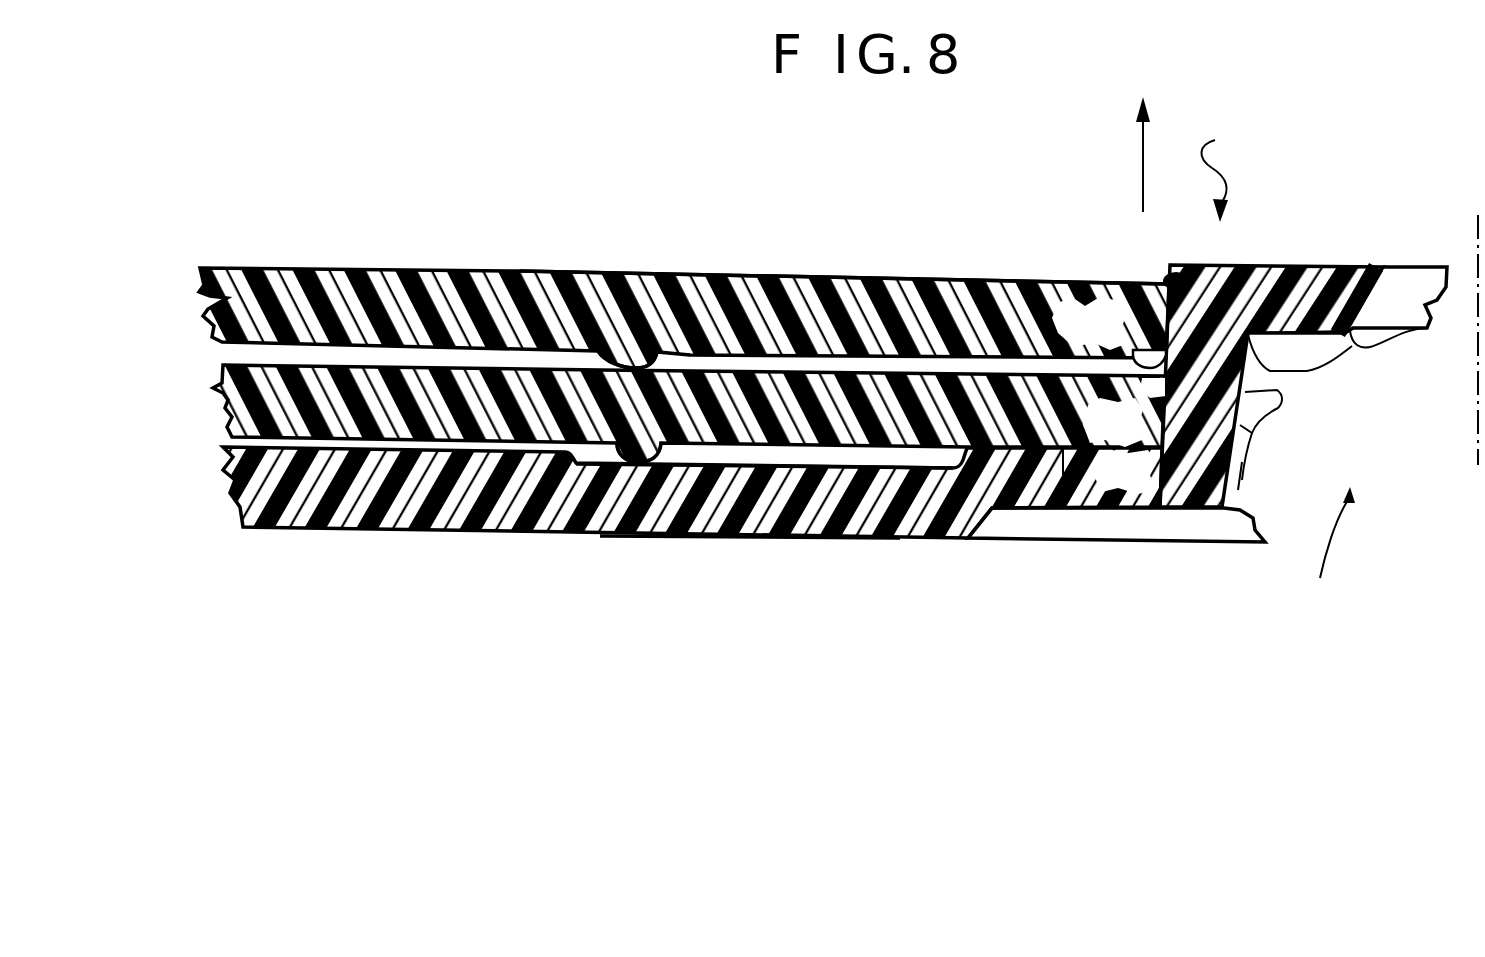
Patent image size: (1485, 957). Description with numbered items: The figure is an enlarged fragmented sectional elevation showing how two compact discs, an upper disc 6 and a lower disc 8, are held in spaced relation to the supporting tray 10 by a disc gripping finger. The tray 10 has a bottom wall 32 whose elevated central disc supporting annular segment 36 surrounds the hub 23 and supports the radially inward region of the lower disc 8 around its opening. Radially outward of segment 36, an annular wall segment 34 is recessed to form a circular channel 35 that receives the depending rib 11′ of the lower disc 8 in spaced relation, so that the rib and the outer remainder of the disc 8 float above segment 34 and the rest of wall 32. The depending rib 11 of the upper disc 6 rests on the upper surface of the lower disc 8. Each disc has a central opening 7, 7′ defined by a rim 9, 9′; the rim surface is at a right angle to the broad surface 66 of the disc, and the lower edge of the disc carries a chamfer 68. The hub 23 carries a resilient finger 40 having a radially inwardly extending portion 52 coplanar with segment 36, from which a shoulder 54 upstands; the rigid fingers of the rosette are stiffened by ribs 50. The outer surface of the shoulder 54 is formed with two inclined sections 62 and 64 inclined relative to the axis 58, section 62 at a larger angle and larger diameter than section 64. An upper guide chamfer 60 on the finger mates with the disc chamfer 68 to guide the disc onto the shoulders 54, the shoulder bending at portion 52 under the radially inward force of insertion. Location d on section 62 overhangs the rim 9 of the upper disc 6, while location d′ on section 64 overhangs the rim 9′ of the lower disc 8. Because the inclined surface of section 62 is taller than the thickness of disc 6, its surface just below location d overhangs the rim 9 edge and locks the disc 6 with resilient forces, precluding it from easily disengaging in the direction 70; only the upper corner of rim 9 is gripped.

The upper disc 6 is at (228, 297).
The lower disc 8 is at (240, 403).
The bottom wall 32 is at (222, 496).
The annular wall segment 34 is at (808, 508).
The circular channel 35 is at (727, 463).
The central disc supporting annular segment 36 is at (1062, 468).
The radially inwardly extending portion 52 is at (1142, 520).
The resilient finger 40 is at (1233, 267).
The rib 50 is at (1403, 283).
The inclined section 62 is at (1293, 375).
The central opening 7 is at (1248, 353).
The shoulder 54 is at (1280, 391).
The central opening 7′ is at (1263, 428).
The inclined section 64 is at (1245, 467).
The axis 58 is at (1478, 212).
The direction 70 is at (1142, 167).
The hub 23 is at (1226, 175).
The tray 10 is at (1336, 541).
The guide chamfer 60 is at (1168, 282).
The location d is at (1168, 282).
The rim 9 is at (1136, 296).
The chamfer 68 is at (1143, 355).
The location d′ is at (1130, 396).
The rim 9′ is at (1125, 472).
The depending rib 11 is at (632, 352).
The depending rib 11′ is at (548, 533).
The broad surface 66 is at (762, 270).